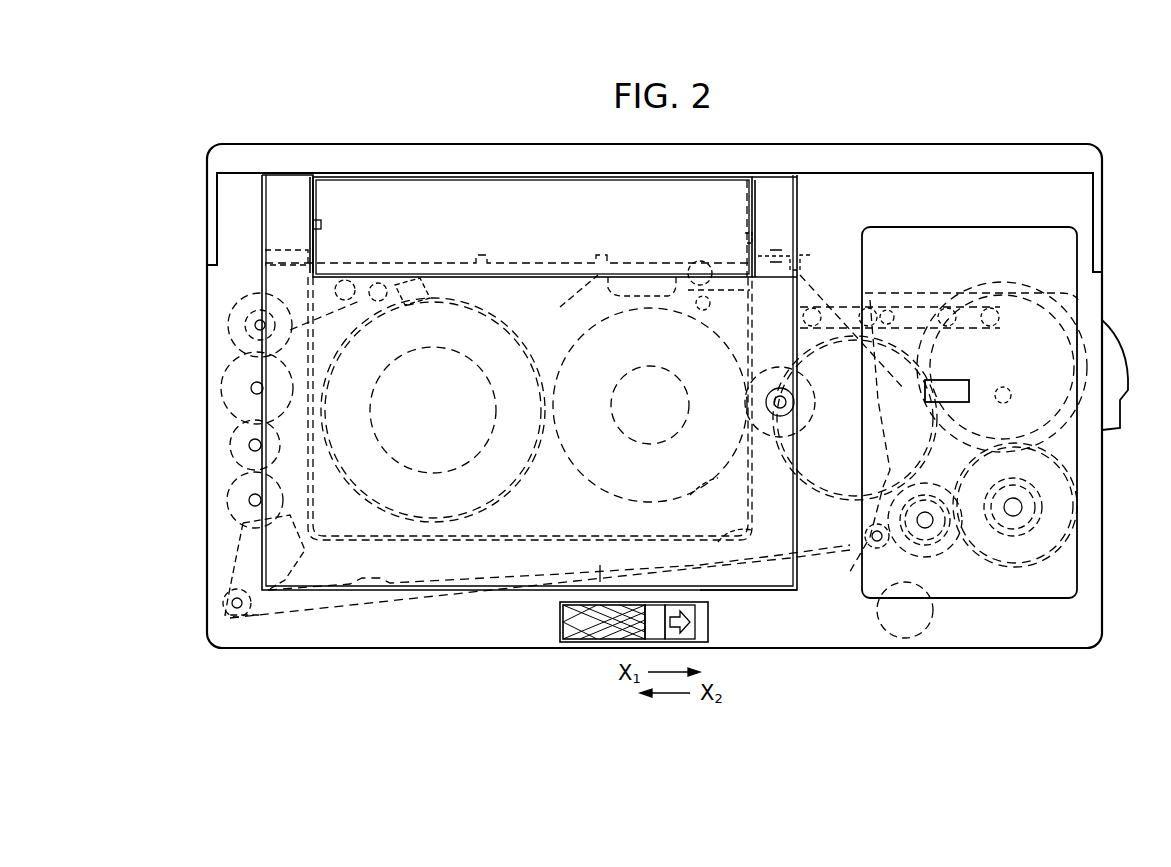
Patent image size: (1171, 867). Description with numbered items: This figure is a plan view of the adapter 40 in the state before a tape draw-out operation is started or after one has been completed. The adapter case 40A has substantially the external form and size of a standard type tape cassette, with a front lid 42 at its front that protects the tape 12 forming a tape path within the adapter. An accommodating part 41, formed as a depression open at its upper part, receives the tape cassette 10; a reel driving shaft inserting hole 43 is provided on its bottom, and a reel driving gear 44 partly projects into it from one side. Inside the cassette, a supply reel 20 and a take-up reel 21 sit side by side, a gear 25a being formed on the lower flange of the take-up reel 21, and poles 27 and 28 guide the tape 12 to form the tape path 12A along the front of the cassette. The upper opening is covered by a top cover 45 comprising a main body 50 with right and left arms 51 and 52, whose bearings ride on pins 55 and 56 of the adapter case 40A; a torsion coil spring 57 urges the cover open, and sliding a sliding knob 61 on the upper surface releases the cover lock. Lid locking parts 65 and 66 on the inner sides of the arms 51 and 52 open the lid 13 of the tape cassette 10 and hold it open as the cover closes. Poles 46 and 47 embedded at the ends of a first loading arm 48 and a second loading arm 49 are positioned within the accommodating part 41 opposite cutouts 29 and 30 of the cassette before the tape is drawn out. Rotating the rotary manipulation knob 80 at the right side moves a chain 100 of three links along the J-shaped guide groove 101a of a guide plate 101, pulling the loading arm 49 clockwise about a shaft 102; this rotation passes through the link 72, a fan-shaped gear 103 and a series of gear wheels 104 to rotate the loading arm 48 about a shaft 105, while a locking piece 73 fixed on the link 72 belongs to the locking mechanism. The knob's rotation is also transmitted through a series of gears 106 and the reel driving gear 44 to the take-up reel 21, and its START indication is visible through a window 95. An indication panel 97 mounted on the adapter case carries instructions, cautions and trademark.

The adapter 40 is at (798, 134).
The adapter case 40A is at (333, 659).
The front lid 42 is at (1038, 154).
The main body 50 is at (783, 500).
The left arm 52 is at (285, 186).
The lid 13 is at (484, 190).
The right arm 51 is at (790, 197).
The top cover 45 is at (780, 583).
The tape cassette 10 is at (390, 540).
The tape 12 is at (348, 333).
The tape path 12A is at (512, 262).
The reel driving shaft inserting hole 43 is at (478, 462).
The supply reel 20 is at (516, 345).
The cutout 29 is at (433, 396).
The take-up reel 21 is at (592, 480).
The cutout 30 is at (655, 298).
The gear 25a is at (702, 487).
The accommodating part 41 is at (751, 526).
The lid locking part 66 is at (322, 222).
The pin 56 is at (290, 262).
The pole 27 is at (342, 270).
The first loading arm 48 is at (378, 275).
The pole 46 is at (412, 272).
The pole 47 is at (620, 262).
The pole 28 is at (696, 262).
The second loading arm 49 is at (651, 303).
The pin 55 is at (745, 238).
The lid locking part 65 is at (745, 199).
The torsion coil spring 57 is at (800, 268).
The indication panel 97 is at (916, 227).
The chain 100 is at (858, 300).
The reel driving gear 44 is at (770, 430).
The guide plate 101 is at (1078, 338).
The guide groove 101a is at (1033, 392).
The window 95 is at (952, 380).
The rotary manipulation knob 80 is at (1112, 368).
The series of gears 106 is at (1015, 584).
The shaft 102 is at (906, 640).
The shaft 105 is at (255, 326).
The series of gear wheels 104 is at (240, 440).
The fan-shaped gear 103 is at (250, 565).
The link 72 is at (362, 606).
The locking piece 73 is at (530, 597).
The sliding knob 61 is at (590, 642).